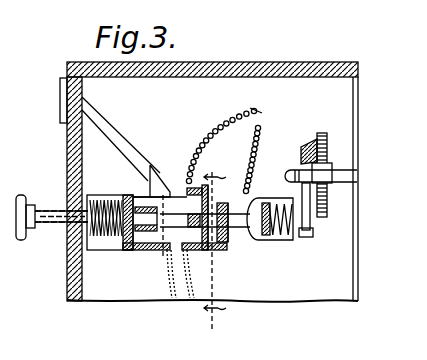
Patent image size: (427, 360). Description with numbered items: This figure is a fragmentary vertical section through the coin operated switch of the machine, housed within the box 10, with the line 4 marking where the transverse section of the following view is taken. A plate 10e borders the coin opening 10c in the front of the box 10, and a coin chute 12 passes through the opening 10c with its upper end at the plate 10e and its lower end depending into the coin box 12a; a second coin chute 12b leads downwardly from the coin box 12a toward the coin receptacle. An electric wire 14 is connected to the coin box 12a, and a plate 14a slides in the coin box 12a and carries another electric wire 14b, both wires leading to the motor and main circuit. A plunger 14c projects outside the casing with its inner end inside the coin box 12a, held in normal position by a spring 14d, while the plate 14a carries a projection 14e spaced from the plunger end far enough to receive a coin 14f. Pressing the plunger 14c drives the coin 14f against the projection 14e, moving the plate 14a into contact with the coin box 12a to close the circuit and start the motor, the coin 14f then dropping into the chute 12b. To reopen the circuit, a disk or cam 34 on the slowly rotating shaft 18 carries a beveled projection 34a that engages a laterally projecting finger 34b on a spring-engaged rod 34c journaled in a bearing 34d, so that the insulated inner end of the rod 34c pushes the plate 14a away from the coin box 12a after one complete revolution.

The section line 4— 4 is at (194, 246).
The box 10 is at (297, 62).
The coin opening 10c is at (82, 99).
The plate 10e is at (60, 115).
The coin chute 12 is at (126, 152).
The coin box 12a is at (147, 252).
The coin chute 12b is at (201, 303).
The electric wire 14 is at (258, 127).
The plate 14a is at (184, 184).
The electric wire 14b is at (253, 116).
The plunger 14c is at (25, 240).
The spring 14d is at (97, 250).
The projection 14e is at (157, 252).
The coin 14f is at (163, 180).
The shaft 18 is at (346, 176).
The disk or cam 34 is at (327, 148).
The beveled projection 34a is at (306, 147).
The finger 34b is at (310, 218).
The rod 34c is at (250, 240).
The bearing 34d is at (287, 245).